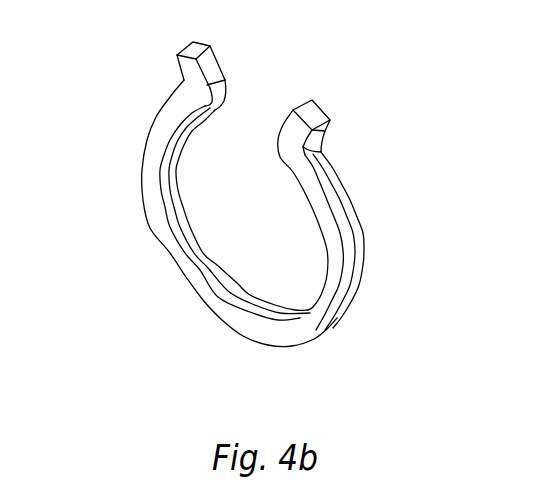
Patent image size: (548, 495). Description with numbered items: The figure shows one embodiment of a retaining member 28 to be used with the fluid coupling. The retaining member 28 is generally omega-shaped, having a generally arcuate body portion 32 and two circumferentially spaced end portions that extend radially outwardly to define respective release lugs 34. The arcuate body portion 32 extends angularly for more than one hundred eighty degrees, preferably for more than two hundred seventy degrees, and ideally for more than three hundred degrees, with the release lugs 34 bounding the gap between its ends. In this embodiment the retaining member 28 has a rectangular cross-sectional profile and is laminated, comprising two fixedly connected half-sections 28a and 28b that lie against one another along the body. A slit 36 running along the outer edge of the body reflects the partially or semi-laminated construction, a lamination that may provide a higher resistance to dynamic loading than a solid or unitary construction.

The retaining member 28 is at (239, 206).
The half-section 28a is at (333, 197).
The half-section 28b is at (345, 197).
The arcuate body portion 32 is at (248, 323).
The release lug 34 is at (193, 43).
The slit 36 is at (360, 268).